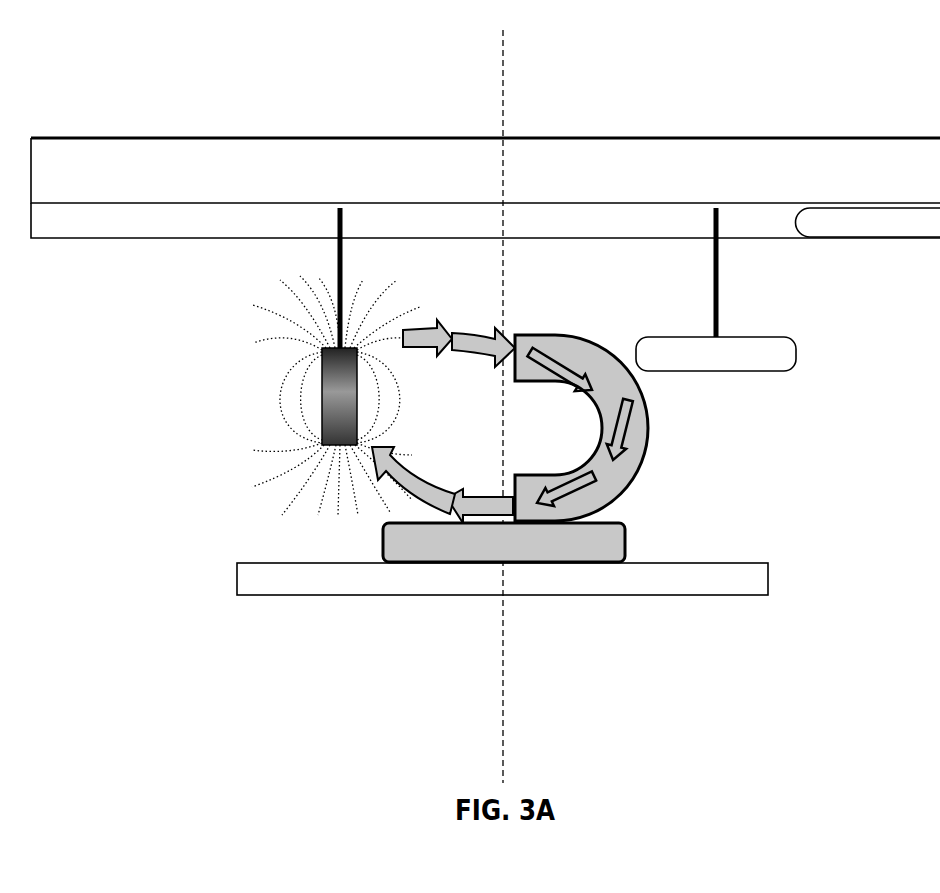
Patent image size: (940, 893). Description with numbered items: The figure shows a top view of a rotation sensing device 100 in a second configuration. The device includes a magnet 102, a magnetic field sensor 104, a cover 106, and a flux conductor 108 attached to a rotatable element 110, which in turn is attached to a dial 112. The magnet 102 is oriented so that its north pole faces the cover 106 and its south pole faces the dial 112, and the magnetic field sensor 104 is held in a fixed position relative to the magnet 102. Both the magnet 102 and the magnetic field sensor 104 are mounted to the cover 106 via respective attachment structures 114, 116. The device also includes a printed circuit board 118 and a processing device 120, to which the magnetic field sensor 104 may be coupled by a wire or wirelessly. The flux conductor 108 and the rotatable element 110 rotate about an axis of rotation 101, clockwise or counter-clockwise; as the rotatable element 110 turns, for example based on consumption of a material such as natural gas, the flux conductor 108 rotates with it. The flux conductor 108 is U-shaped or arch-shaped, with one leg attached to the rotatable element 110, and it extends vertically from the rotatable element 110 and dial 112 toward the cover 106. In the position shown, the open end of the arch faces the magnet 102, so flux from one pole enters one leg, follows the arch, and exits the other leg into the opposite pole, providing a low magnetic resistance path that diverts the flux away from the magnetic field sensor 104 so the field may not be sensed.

The rotation sensing device 100 is at (878, 90).
The axis of rotation 101 is at (520, 406).
The magnet 102 is at (326, 395).
The magnetic field sensor 104 is at (716, 354).
The cover 106 is at (485, 170).
The flux conductor 108 is at (596, 421).
The rotatable element 110 is at (504, 542).
The dial 112 is at (502, 580).
The attachment structure 114 is at (328, 247).
The attachment structure 116 is at (726, 299).
The printed circuit board 118 is at (485, 220).
The processing device 120 is at (868, 222).